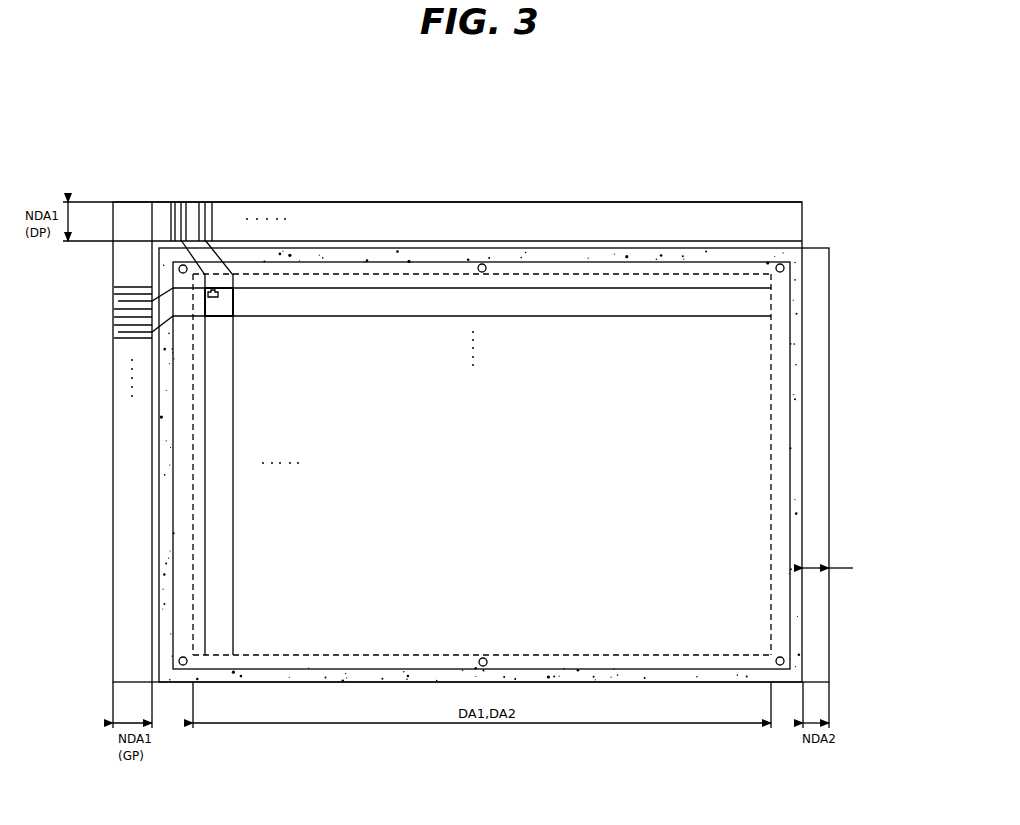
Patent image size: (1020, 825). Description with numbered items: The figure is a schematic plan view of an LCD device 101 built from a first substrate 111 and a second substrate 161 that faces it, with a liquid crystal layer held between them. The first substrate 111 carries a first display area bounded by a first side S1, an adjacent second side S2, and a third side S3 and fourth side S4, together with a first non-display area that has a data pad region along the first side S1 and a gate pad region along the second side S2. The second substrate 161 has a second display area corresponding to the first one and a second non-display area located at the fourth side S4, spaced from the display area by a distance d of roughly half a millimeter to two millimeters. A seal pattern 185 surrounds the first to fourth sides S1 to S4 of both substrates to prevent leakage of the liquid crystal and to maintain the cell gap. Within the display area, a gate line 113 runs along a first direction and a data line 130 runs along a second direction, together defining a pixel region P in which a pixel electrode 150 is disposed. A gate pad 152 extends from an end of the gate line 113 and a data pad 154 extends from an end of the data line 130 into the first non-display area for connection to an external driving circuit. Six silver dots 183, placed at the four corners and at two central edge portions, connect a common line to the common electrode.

The LCD device 101 is at (800, 167).
The first substrate 111 is at (637, 198).
The gate line 113 is at (550, 318).
The data line 130 is at (235, 422).
The pixel electrode 150 is at (237, 305).
The gate pad 152 is at (120, 337).
The data pad 154 is at (178, 212).
The second substrate 161 is at (834, 285).
The silver dot 183 is at (783, 265).
The seal pattern 185 is at (798, 377).
The pixel region P is at (230, 287).
The first side S1 is at (437, 270).
The second side S2 is at (188, 512).
The third side S3 is at (437, 660).
The fourth side S4 is at (774, 512).
The distance d is at (828, 559).